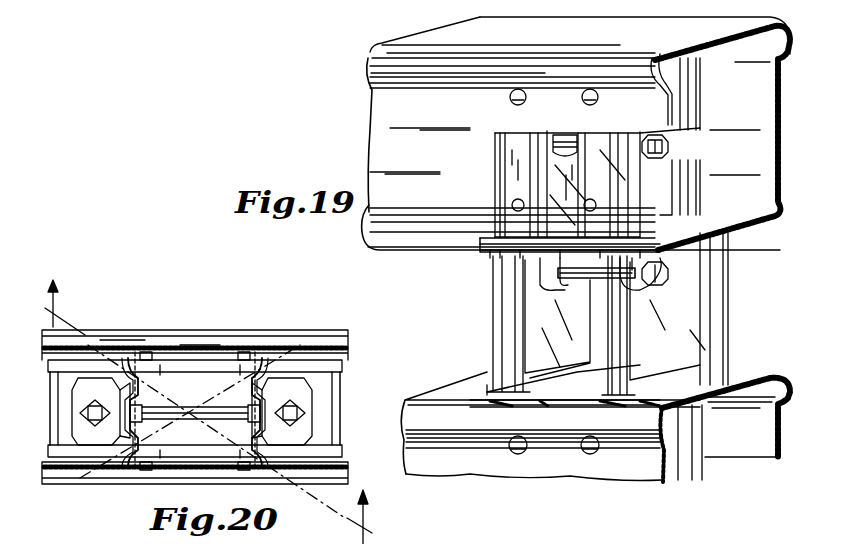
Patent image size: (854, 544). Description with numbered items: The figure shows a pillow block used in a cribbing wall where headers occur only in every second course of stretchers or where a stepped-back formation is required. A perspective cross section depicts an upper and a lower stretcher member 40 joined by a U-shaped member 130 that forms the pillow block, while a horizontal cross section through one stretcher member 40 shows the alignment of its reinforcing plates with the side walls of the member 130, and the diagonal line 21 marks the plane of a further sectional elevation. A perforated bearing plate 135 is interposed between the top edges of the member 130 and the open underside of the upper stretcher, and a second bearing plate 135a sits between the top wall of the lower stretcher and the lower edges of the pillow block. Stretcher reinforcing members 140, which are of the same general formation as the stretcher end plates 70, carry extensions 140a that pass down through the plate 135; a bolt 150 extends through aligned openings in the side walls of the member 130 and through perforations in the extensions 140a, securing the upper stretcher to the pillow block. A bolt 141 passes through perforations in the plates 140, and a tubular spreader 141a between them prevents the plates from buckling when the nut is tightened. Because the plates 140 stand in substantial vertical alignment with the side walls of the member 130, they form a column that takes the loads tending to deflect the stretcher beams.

In FIG. 19, the stretcher member 40 is at (368, 66).
In FIG. 20, the stretcher member 40 is at (290, 340).
In FIG. 19, the stretcher end plate 70 is at (543, 150).
In FIG. 19, the stretcher reinforcing member 140 is at (690, 100).
In FIG. 19, the bolt 141 is at (668, 150).
In FIG. 19, the tubular spreader 141a is at (572, 134).
In FIG. 20, the tubular spreader 141a is at (228, 405).
In FIG. 19, the bearing plate 135 is at (735, 232).
In FIG. 19, the extension 140a is at (545, 285).
In FIG. 19, the bolt 150 is at (575, 285).
In FIG. 19, the U-shaped member 130 is at (690, 330).
In FIG. 20, the U-shaped member 130 is at (112, 484).
In FIG. 19, the bearing plate 135a is at (555, 388).
In FIG. 20, the section line 21 is at (215, 401).